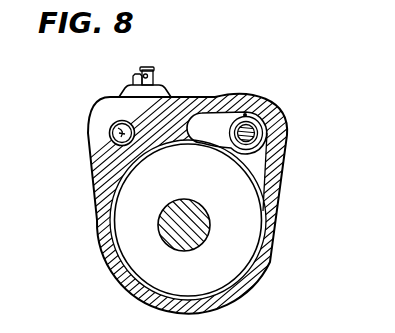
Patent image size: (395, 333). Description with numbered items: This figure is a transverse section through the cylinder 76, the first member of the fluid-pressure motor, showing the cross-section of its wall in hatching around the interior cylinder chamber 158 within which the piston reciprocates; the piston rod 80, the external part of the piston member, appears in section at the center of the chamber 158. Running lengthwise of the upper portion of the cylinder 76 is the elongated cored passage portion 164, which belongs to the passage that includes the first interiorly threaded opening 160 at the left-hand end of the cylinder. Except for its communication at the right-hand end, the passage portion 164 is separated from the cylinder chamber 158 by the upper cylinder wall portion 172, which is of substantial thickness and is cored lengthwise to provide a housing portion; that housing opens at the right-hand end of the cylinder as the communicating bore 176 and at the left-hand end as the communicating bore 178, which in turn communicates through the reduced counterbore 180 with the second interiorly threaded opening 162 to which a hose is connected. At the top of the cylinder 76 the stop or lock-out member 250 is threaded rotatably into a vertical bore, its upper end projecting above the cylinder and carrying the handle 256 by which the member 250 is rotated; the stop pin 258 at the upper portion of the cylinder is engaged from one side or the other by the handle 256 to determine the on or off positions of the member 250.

The cylinder 76 is at (258, 272).
The piston rod 80 is at (210, 214).
The cylinder chamber 158 is at (258, 247).
The first interiorly threaded opening 160 is at (257, 131).
The second interiorly threaded opening 162 is at (112, 131).
The cored passage portion 164 is at (213, 124).
The upper cylinder wall portion 172 is at (202, 150).
The communicating bore 176 is at (113, 137).
The communicating bore 178 is at (265, 117).
The reduced counterbore 180 is at (117, 128).
The stop or lock-out member 250 is at (148, 68).
The handle 256 is at (152, 73).
The stop pin 258 is at (137, 77).